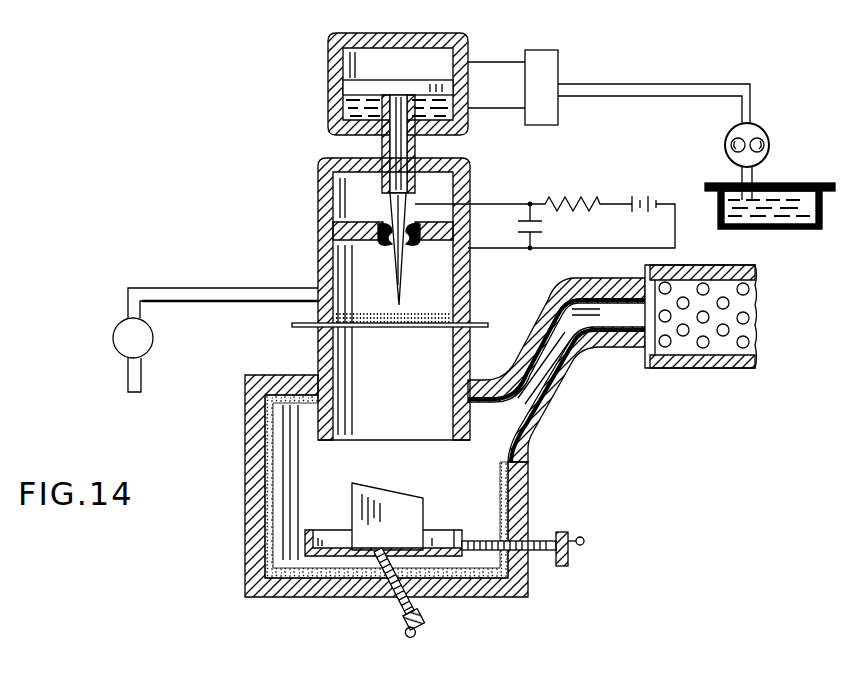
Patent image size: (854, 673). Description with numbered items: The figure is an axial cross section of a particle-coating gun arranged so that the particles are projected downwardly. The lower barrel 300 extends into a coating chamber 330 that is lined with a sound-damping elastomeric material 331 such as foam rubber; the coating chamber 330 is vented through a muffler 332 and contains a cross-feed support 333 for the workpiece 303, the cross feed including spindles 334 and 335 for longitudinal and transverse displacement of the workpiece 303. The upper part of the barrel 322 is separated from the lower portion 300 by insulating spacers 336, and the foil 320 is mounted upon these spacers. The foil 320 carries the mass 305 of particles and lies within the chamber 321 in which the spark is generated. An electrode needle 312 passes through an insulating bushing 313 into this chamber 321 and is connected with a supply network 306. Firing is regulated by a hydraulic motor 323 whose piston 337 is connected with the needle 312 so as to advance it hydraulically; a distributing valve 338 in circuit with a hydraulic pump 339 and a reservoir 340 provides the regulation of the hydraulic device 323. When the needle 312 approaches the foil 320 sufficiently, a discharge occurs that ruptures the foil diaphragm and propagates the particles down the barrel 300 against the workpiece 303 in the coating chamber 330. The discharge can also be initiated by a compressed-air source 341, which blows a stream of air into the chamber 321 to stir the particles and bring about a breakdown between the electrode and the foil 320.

The barrel 300 is at (330, 441).
The workpiece 303 is at (443, 492).
The mass of particles 305 is at (410, 314).
The supply network 306 is at (676, 244).
The needle 312 is at (396, 270).
The insulating bushing 313 is at (390, 222).
The foil 320 is at (300, 327).
The chamber 321 is at (445, 282).
The upper part of the barrel 322 is at (317, 252).
The hydraulic motor 323 is at (466, 42).
The coating chamber 330 is at (335, 594).
The sound-damping elastomeric material 331 is at (533, 480).
The muffler 332 is at (736, 370).
The cross-feed support 333 is at (457, 532).
The spindle 334 is at (545, 556).
The spindle 335 is at (405, 610).
The insulating spacers 336 is at (468, 314).
The piston 337 is at (388, 82).
The distributing valve 338 is at (557, 62).
The hydraulic pump 339 is at (755, 130).
The reservoir 340 is at (790, 232).
The compressed-air source 341 is at (237, 291).